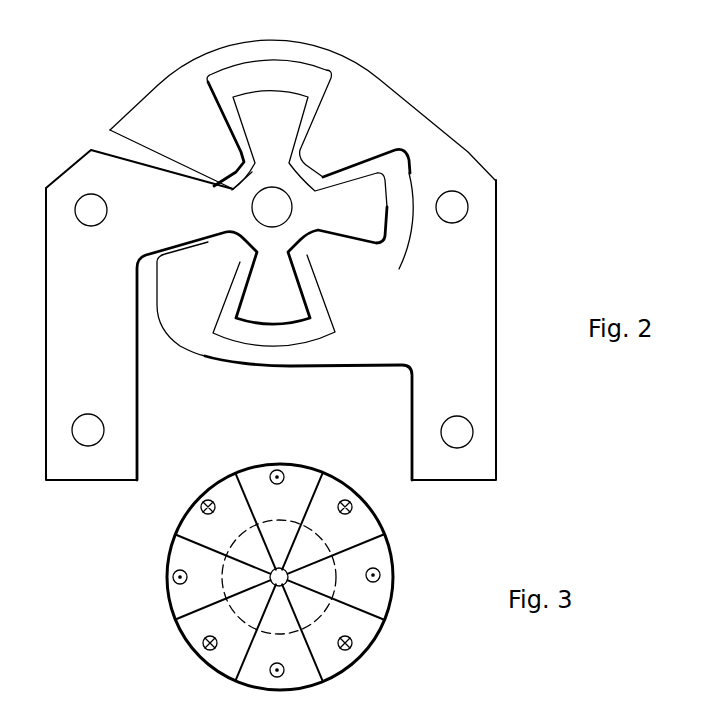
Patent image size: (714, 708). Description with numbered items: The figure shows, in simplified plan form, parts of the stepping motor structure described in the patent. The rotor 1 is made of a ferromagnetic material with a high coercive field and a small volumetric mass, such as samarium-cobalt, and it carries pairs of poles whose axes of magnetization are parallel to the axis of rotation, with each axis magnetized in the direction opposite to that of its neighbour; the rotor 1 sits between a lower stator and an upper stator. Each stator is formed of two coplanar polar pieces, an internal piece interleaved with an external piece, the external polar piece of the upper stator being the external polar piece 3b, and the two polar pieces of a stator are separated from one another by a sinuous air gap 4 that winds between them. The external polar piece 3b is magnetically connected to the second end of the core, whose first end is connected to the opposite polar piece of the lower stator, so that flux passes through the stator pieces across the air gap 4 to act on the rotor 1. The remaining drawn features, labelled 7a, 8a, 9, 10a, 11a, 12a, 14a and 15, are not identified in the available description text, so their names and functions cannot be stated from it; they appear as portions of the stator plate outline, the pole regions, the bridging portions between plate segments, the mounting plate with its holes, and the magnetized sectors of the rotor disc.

In FIG. 3, the rotor 1 is at (393, 599).
In FIG. 2, the external polar piece of the upper stator 3b is at (440, 157).
In FIG. 3, the sinuous air gap 4 is at (346, 651).
In FIG. 2, the stator pole segment 7a is at (160, 105).
In FIG. 2, the pole piece 8a is at (278, 102).
In FIG. 3, the magnet poles 9 is at (378, 567).
In FIG. 2, the arc bridge portion 10a is at (363, 90).
In FIG. 2, the saturable bridge 11a is at (250, 187).
In FIG. 2, the mounting plate 12a is at (457, 272).
In FIG. 2, the saturable bridge 14a is at (185, 255).
In FIG. 2, the saturable bridge 15 is at (392, 258).